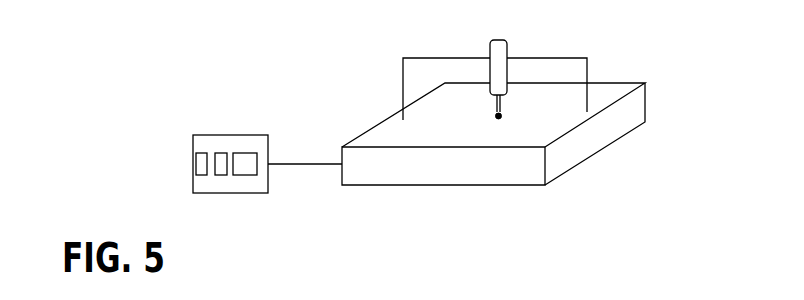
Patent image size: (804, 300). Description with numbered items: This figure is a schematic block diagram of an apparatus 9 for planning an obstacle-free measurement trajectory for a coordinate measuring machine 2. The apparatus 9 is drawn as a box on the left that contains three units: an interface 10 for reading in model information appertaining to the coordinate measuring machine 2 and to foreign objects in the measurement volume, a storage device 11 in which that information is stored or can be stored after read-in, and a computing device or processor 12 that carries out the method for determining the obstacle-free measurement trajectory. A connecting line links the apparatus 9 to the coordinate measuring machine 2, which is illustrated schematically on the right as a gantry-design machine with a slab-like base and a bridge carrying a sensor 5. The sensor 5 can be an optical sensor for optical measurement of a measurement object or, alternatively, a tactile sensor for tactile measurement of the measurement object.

The coordinate measuring machine 2 is at (595, 52).
The sensor 5 is at (503, 115).
The apparatus 9 is at (195, 193).
The interface 10 is at (196, 164).
The storage device 11 is at (221, 153).
The processor 12 is at (248, 178).